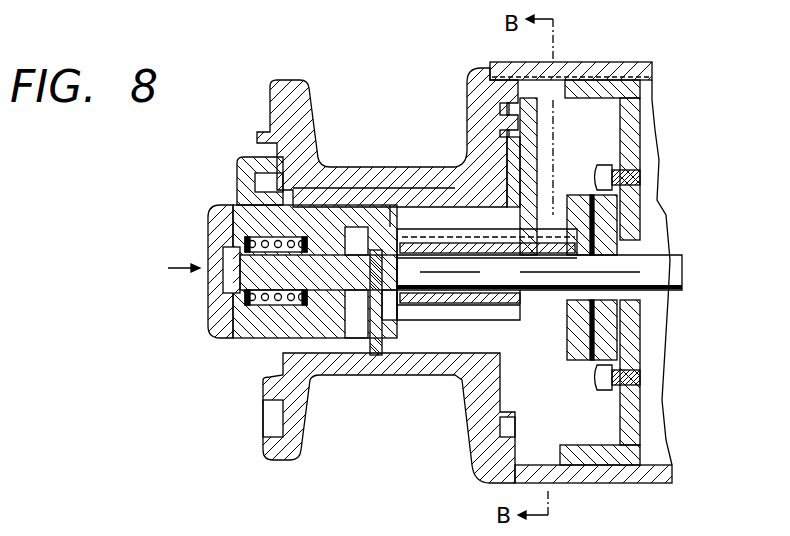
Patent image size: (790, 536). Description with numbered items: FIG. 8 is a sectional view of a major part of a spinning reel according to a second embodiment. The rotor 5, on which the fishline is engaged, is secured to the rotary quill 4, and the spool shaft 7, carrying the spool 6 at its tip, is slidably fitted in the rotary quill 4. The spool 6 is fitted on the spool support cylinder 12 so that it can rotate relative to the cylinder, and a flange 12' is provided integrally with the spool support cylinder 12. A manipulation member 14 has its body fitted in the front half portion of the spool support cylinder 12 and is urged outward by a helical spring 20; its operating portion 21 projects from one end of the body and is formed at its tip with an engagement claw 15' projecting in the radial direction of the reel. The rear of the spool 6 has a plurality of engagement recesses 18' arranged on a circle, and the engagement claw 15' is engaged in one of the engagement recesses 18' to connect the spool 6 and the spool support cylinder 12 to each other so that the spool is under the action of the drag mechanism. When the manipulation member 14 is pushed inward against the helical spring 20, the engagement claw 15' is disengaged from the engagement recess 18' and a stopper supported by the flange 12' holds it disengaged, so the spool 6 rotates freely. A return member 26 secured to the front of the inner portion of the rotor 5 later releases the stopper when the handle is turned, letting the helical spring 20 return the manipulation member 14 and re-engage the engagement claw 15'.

The rotary quill 4 is at (653, 232).
The rotor 5 is at (630, 127).
The spool 6 is at (353, 368).
The spool shaft 7 is at (530, 275).
The spool support cylinder 12 is at (387, 137).
The flange 12' is at (557, 176).
The manipulation member 14 is at (214, 222).
The engagement claw 15' is at (473, 87).
The engagement recesses 18' is at (485, 57).
The helical spring 20 is at (270, 243).
The operating portion 21 is at (412, 210).
The return member 26 is at (548, 300).